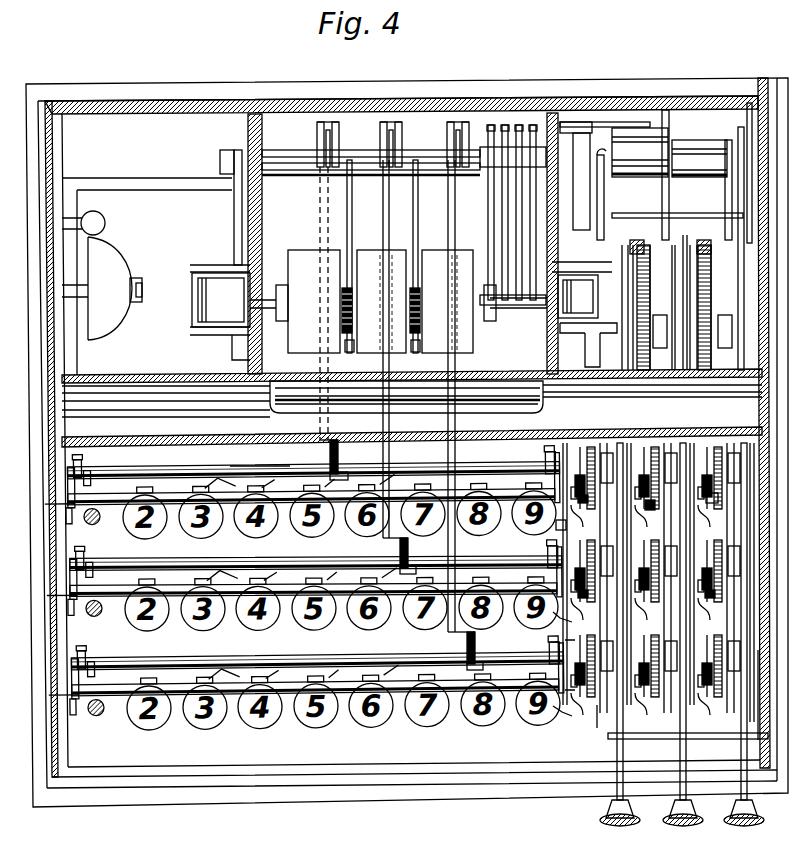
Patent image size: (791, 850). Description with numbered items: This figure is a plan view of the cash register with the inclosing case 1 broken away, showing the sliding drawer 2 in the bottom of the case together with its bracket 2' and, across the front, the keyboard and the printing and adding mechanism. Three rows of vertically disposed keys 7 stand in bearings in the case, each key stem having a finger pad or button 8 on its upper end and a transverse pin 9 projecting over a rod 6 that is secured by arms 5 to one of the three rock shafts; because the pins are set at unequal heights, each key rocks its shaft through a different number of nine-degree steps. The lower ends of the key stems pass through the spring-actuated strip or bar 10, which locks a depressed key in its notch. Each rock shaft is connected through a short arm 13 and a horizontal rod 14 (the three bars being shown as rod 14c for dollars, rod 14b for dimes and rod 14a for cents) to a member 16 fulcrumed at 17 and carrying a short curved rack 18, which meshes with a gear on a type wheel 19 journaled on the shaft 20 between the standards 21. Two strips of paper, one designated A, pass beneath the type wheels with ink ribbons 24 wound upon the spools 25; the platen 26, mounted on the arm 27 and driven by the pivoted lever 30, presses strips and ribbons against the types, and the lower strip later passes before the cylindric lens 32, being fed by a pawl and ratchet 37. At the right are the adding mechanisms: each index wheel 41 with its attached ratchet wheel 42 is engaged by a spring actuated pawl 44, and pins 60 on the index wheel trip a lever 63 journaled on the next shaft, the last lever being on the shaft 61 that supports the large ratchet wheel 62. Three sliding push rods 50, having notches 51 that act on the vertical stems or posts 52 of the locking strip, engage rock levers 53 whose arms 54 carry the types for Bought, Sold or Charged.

The inclosing case 1 is at (50, 180).
The sliding drawer 2 is at (108, 288).
The bell bracket 2' is at (147, 276).
The arms 5 is at (84, 472).
The rods 6 is at (300, 494).
The keys 7 is at (90, 522).
The finger pad or button 8 is at (130, 528).
The transverse pin 9 is at (218, 480).
The strip or bar 10 is at (84, 722).
The short arm 13 is at (340, 470).
The horizontal rod 14 is at (325, 446).
The key bar 14a is at (350, 654).
The key bar 14b is at (346, 558).
The key bar 14c is at (266, 464).
The member 16 is at (352, 250).
The fulcrum 17 is at (330, 163).
The short curved rack 18 is at (385, 355).
The type wheel 19 is at (380, 301).
The shaft 20 is at (380, 302).
The standards 21 is at (248, 128).
The ink ribbon 24 is at (395, 300).
The spools 25 is at (606, 250).
The platen 26 is at (206, 276).
The arm 27 is at (240, 198).
The pivoted lever 30 is at (668, 810).
The cylindric lens 32 is at (412, 408).
The pawl and ratchet 37 is at (740, 512).
The index wheel 41 is at (582, 676).
The ratchet wheel 42 is at (588, 503).
The spring actuated pawl 44 is at (574, 665).
The sliding push rods 50 is at (618, 212).
The notches 51 is at (752, 672).
The vertical stems or posts 52 is at (712, 503).
The rock lever 53 is at (655, 232).
The arm 54 is at (498, 131).
The pins 60 is at (564, 667).
The shaft 61 is at (717, 325).
The large ratchet wheel 62 is at (652, 303).
The lever 63 is at (560, 528).
The strip of paper A is at (371, 187).